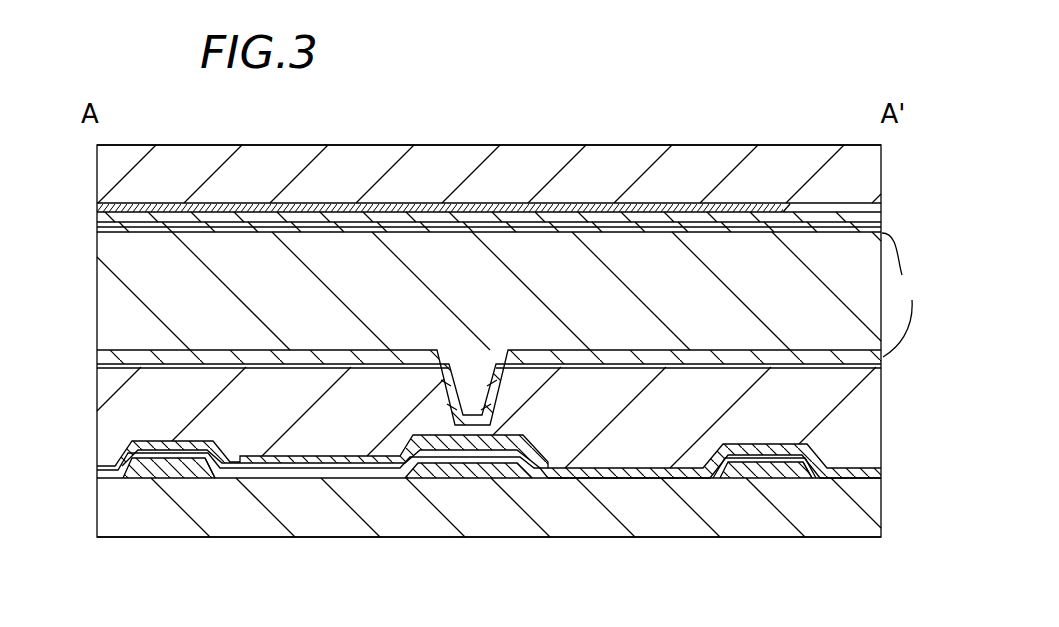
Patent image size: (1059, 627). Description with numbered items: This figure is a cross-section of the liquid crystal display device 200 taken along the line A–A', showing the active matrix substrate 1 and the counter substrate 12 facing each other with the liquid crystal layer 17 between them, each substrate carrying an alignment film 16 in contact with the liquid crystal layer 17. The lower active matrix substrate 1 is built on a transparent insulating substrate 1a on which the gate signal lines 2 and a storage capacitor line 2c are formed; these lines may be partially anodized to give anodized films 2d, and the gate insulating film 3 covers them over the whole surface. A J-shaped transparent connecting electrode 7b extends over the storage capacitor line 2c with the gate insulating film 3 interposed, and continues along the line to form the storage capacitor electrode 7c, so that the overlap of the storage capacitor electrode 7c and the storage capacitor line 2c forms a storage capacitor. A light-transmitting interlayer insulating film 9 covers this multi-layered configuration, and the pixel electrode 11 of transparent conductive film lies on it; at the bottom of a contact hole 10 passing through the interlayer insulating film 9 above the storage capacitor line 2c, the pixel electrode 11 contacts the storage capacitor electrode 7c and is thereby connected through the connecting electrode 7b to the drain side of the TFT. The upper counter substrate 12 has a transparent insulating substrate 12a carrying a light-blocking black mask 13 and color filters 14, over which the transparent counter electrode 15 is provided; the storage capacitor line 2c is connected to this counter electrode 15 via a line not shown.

The liquid crystal display device 200 is at (768, 23).
The active matrix substrate 1 is at (75, 538).
The transparent insulating substrate 1a is at (870, 513).
The gate signal line 2 is at (183, 478).
The storage capacitor line 2c is at (470, 478).
The anodized film 2d is at (223, 474).
The gate insulating film 3 is at (283, 470).
The connecting electrode 7b is at (360, 464).
The storage capacitor electrode 7c is at (548, 452).
The interlayer insulating film 9 is at (860, 408).
The contact hole 10 is at (471, 348).
The pixel electrode 11 is at (673, 368).
The counter substrate 12 is at (73, 140).
The transparent insulating substrate 12a is at (683, 170).
The black mask 13 is at (830, 208).
The color filter 14 is at (343, 203).
The counter electrode 15 is at (278, 204).
The alignment film 16 is at (905, 295).
The liquid crystal layer 17 is at (583, 253).